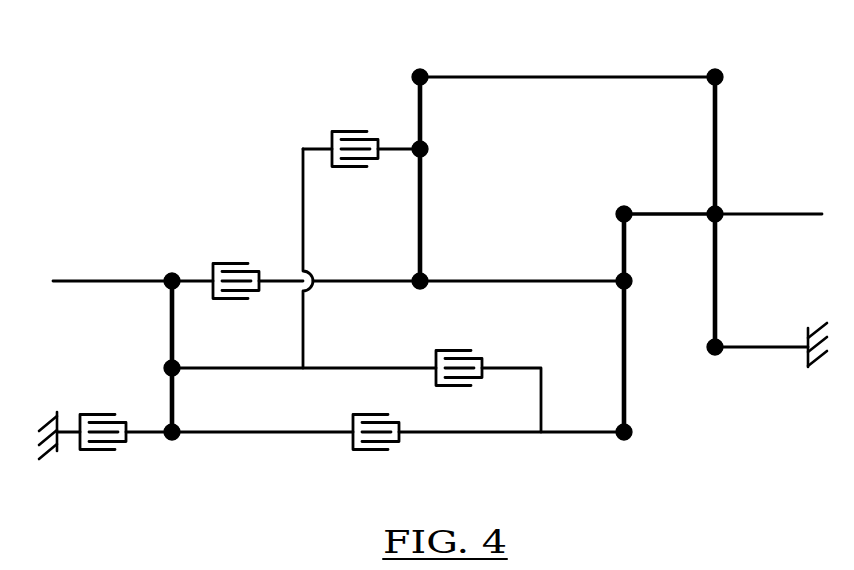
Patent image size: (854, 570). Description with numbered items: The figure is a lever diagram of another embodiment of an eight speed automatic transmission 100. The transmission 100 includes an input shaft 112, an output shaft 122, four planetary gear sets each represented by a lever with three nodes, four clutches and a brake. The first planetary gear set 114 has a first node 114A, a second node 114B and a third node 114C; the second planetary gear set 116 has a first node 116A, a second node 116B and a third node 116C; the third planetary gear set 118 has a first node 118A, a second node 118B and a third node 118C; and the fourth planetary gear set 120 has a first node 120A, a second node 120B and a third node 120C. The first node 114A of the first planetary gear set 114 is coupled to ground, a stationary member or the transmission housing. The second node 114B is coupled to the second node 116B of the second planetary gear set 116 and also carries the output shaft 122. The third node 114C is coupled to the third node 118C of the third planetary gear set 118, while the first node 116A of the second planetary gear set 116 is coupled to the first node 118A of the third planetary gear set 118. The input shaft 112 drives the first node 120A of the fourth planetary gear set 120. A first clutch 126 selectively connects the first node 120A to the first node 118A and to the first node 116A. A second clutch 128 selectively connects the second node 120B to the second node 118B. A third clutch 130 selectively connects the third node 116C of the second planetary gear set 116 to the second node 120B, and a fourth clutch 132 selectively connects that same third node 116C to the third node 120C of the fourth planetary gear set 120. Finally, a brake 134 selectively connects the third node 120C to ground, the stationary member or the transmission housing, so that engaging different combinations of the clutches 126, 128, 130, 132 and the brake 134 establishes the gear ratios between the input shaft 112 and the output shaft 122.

The eight speed automatic transmission 100 is at (107, 110).
The input shaft 112 is at (90, 283).
The first planetary gear set 114 is at (713, 362).
The first node of first planetary gear set 114A is at (722, 346).
The second node of first planetary gear set 114B is at (720, 213).
The third node of first planetary gear set 114C is at (760, 53).
The second planetary gear set 116 is at (623, 446).
The first node of second planetary gear set 116A is at (618, 280).
The second node of second planetary gear set 116B is at (624, 210).
The third node of second planetary gear set 116C is at (617, 431).
The third planetary gear set 118 is at (420, 298).
The first node of third planetary gear set 118A is at (427, 279).
The second node of third planetary gear set 118B is at (427, 147).
The third node of third planetary gear set 118C is at (462, 54).
The fourth planetary gear set 120 is at (165, 452).
The first node of fourth planetary gear set 120A is at (163, 279).
The second node of fourth planetary gear set 120B is at (178, 366).
The third node of fourth planetary gear set 120C is at (177, 430).
The output shaft 122 is at (812, 216).
The first clutch 126 is at (242, 262).
The second clutch 128 is at (352, 130).
The third clutch 130 is at (458, 350).
The fourth clutch 132 is at (380, 452).
The brake 134 is at (100, 413).